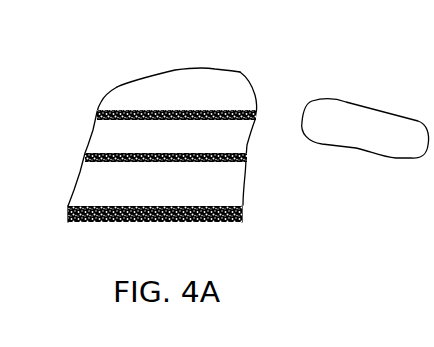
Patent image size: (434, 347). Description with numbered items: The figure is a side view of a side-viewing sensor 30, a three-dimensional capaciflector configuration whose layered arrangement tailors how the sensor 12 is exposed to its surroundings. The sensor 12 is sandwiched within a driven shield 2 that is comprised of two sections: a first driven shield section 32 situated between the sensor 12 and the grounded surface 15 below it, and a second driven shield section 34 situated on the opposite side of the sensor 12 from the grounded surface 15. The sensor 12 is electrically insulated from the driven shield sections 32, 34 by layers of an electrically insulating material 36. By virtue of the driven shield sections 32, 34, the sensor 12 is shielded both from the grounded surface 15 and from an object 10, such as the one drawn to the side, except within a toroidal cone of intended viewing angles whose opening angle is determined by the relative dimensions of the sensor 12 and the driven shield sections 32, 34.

The side-viewing sensor 30 is at (104, 41).
The driven shield 2 is at (163, 83).
The second driven shield section 34 is at (238, 73).
The electrically insulating material 36 is at (98, 111).
The sensor 12 is at (96, 134).
The driven shield section 32 is at (90, 192).
The grounded surface 15 is at (243, 217).
The object 10 is at (340, 108).